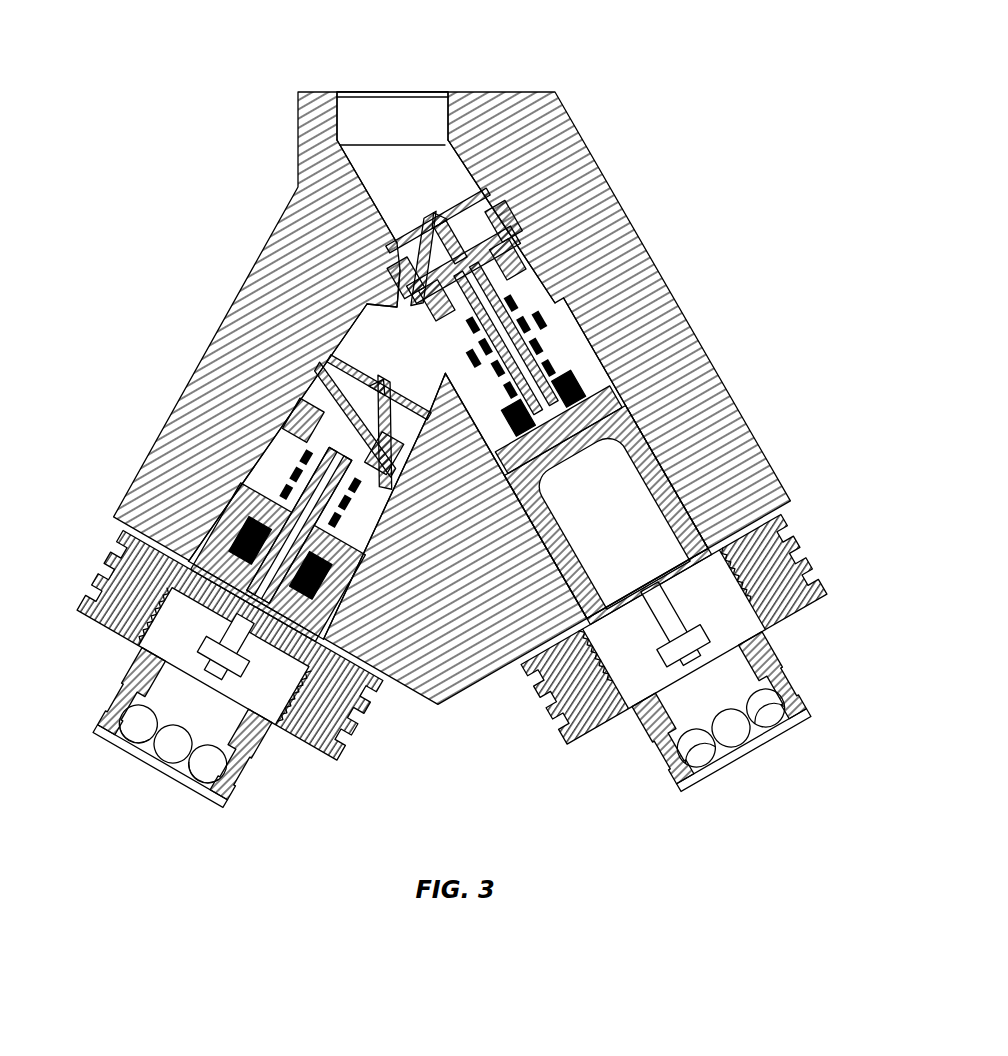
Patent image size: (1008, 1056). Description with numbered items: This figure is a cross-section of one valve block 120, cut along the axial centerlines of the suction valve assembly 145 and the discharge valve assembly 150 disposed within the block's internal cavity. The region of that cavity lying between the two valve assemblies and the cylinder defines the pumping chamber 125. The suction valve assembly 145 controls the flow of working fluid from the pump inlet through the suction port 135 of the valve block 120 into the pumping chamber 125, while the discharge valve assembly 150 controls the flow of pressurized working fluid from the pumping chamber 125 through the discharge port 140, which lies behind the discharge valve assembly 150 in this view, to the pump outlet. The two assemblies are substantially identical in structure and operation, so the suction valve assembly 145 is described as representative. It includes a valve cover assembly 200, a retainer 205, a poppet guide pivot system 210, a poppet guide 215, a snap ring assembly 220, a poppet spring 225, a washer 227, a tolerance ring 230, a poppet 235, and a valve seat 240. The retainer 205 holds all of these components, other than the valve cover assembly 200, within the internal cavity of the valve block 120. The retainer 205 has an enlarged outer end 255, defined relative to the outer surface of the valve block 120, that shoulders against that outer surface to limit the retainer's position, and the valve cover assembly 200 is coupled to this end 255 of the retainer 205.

The valve block 120 is at (563, 130).
The pumping chamber 125 is at (412, 368).
The suction port 135 is at (386, 88).
The discharge port 140 is at (368, 498).
The suction valve assembly 145 is at (628, 383).
The discharge valve assembly 150 is at (381, 562).
The valve cover assembly 200 is at (808, 625).
The retainer 205 is at (745, 475).
The poppet guide pivot system 210 is at (583, 408).
The poppet guide 215 is at (578, 312).
The snap ring assembly 220 is at (604, 347).
The poppet spring 225 is at (565, 300).
The washer 227 is at (478, 362).
The tolerance ring 230 is at (572, 308).
The poppet 235 is at (433, 207).
The valve seat 240 is at (400, 290).
The enlarged outer end 255 is at (793, 522).